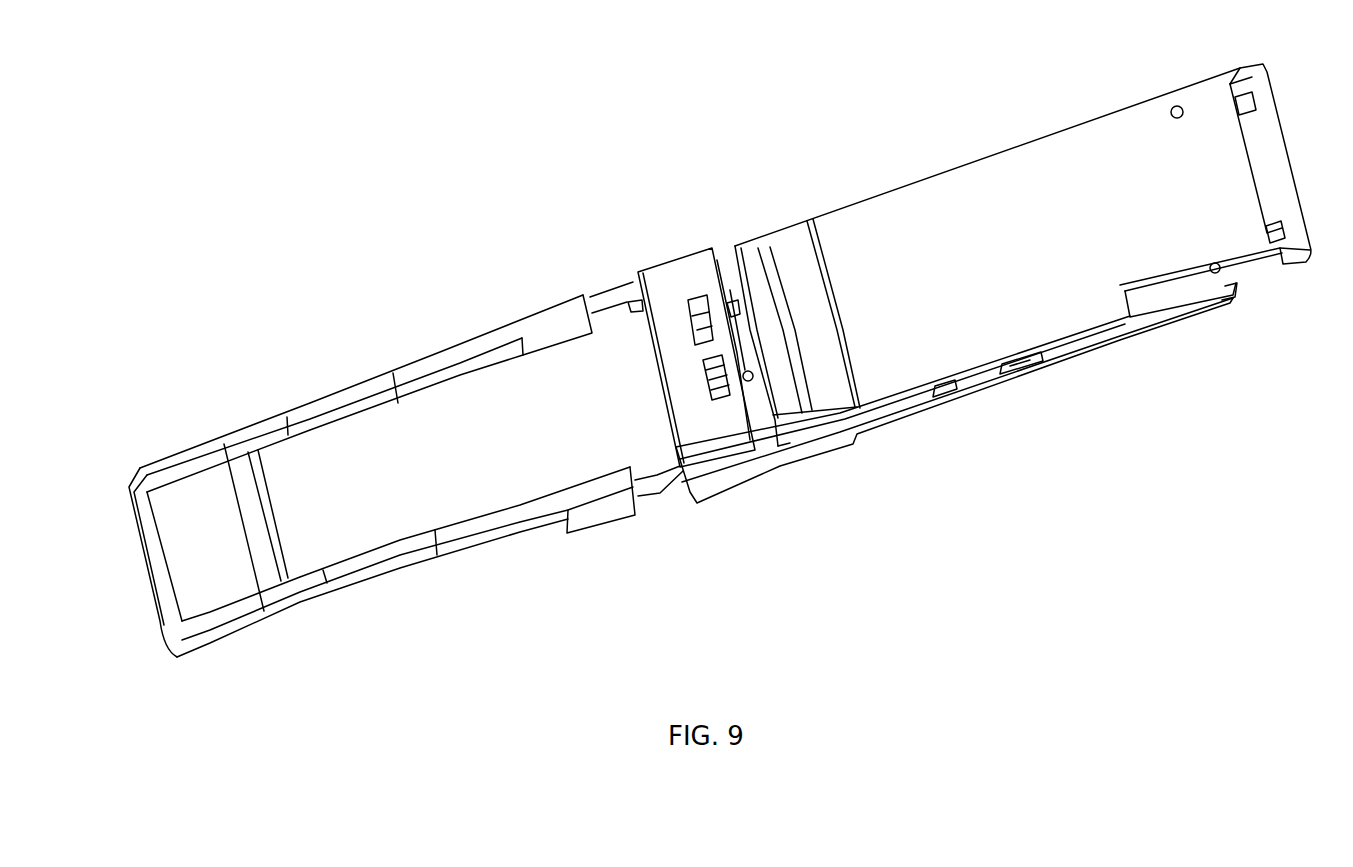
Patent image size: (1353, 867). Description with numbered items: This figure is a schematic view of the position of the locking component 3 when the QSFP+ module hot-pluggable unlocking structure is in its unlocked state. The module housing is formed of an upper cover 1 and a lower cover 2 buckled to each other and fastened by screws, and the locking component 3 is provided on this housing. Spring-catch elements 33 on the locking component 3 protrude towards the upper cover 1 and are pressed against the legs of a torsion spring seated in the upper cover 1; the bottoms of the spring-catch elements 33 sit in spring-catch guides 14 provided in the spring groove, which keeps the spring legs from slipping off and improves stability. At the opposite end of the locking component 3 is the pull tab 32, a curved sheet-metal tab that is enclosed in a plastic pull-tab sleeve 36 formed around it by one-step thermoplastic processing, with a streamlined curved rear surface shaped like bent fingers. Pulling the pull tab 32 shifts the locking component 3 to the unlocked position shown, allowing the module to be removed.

The upper cover 1 is at (898, 236).
The lower cover 2 is at (1065, 365).
The locking component 3 is at (718, 457).
The spring-catch guide 14 is at (731, 303).
The pull tab 32 is at (655, 490).
The spring-catch elements 33 is at (693, 307).
The pull-tab sleeve 36 is at (601, 512).